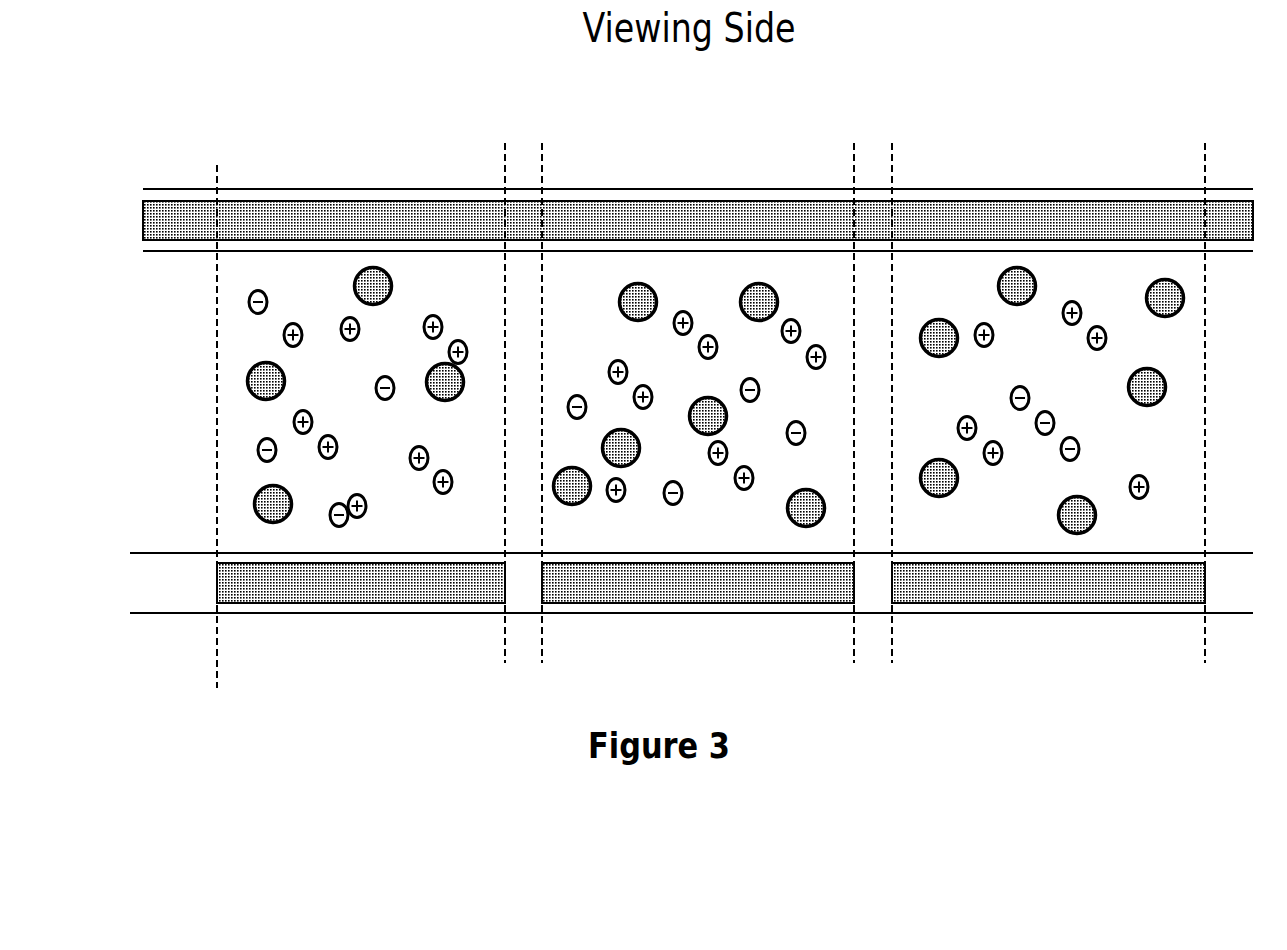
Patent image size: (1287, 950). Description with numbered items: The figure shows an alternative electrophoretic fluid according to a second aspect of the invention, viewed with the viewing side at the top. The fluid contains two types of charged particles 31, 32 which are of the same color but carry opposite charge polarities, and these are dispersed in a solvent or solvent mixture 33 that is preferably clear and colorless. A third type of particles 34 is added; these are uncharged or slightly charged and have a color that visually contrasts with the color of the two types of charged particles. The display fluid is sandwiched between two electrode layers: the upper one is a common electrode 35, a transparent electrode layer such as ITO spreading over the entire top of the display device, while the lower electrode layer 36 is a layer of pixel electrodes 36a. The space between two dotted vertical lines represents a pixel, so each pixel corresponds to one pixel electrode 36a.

The first type of charged particles 31 is at (282, 336).
The second type of charged particles 32 is at (257, 455).
The solvent or solvent mixture 33 is at (1186, 481).
The third type of particles 34 is at (1167, 387).
The common electrode 35 is at (629, 200).
The electrode layer 36 is at (142, 600).
The pixel electrodes 36a is at (356, 600).